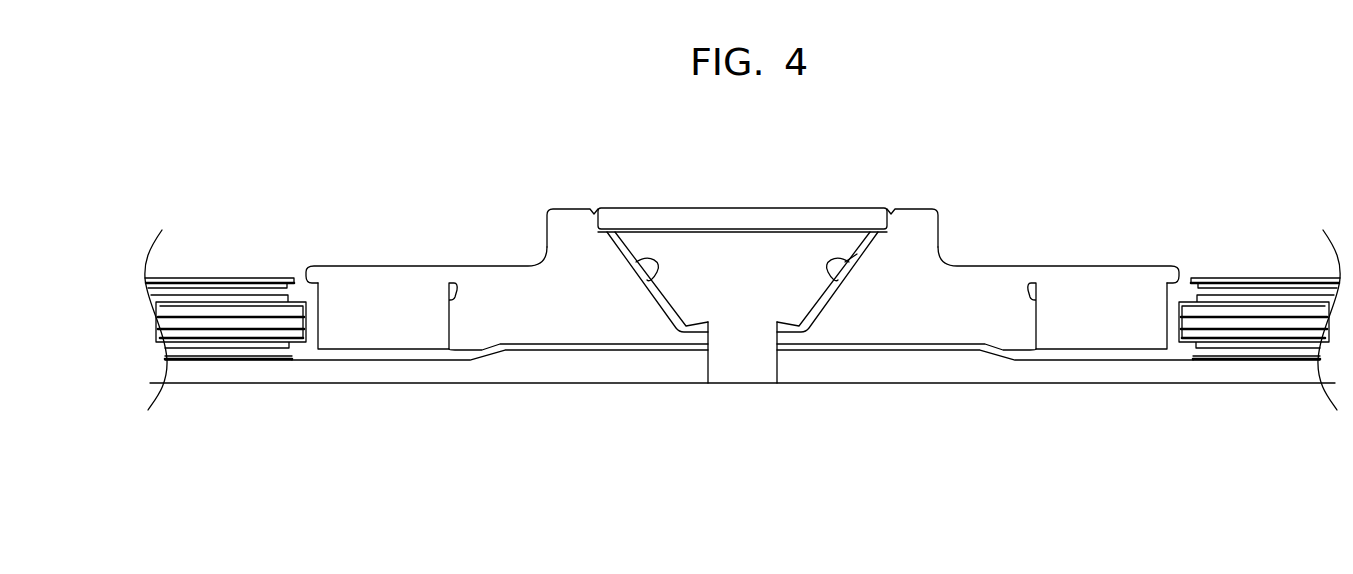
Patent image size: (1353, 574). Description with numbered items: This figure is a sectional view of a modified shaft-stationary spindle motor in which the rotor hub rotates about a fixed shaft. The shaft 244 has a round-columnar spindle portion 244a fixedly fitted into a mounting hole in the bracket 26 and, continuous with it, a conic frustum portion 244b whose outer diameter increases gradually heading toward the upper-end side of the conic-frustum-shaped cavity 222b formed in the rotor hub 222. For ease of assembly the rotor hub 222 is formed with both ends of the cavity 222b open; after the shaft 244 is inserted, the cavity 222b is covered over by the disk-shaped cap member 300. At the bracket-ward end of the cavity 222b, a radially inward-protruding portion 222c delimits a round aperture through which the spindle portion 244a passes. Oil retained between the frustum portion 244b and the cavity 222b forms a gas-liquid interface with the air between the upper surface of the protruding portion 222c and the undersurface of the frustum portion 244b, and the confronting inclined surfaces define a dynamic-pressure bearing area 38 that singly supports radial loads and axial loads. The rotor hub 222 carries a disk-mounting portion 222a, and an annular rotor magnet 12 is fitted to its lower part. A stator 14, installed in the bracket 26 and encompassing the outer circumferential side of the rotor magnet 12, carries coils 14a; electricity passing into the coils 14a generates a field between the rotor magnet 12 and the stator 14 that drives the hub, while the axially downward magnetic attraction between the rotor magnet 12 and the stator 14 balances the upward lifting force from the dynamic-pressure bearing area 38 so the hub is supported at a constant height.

The rotor magnet 12 is at (352, 330).
The stator 14 is at (1225, 332).
The coils 14a is at (220, 300).
The bracket 26 is at (1080, 368).
The dynamic-pressure bearing area 38 is at (857, 254).
The rotor hub 222 is at (577, 220).
The flange portion 222a is at (387, 273).
The conic-frustum-shaped cavity 222b is at (633, 260).
The radially inward-protruding portion 222c is at (690, 336).
The shaft 244 is at (747, 377).
The spindle portion 244a is at (740, 347).
The conic frustum portion 244b is at (773, 256).
The plate 300 is at (722, 218).